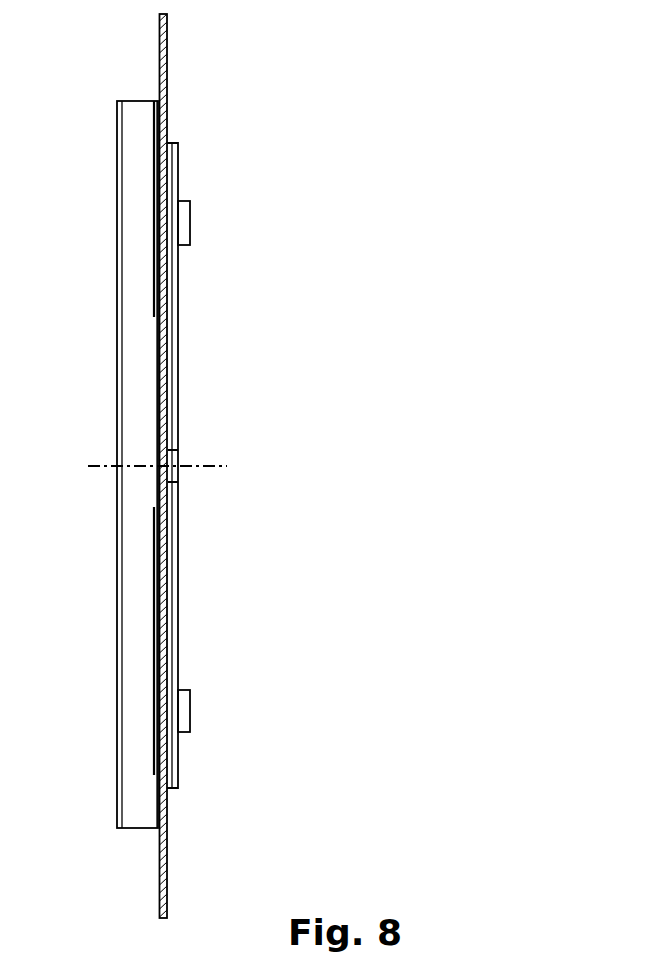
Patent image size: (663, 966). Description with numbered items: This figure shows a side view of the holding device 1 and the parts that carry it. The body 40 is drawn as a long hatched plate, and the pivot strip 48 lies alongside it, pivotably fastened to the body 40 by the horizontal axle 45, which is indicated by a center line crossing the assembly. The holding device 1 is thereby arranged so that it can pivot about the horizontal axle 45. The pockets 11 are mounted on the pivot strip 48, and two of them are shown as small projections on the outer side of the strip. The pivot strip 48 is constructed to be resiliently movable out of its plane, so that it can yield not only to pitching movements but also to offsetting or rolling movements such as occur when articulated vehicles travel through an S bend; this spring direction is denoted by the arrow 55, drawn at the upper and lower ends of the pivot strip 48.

The holding device 1 is at (88, 110).
The body 40 is at (168, 43).
The arrow (spring direction) 55 is at (173, 158).
The pockets 11 is at (183, 225).
The pivot strip 48 is at (172, 413).
The horizontal axle 45 is at (202, 467).